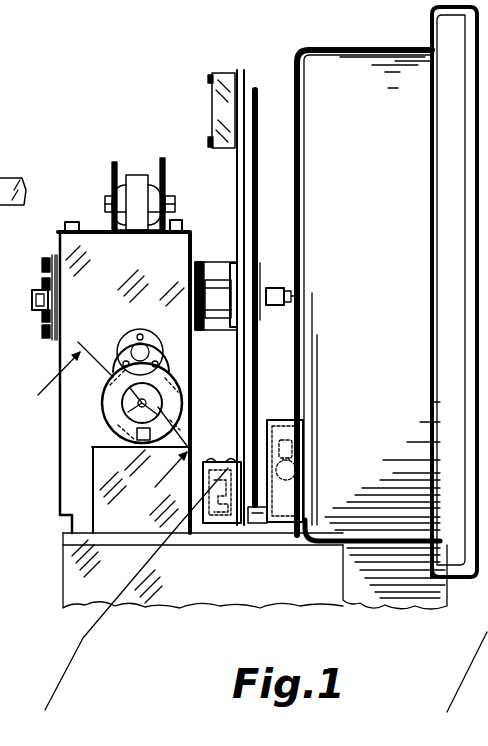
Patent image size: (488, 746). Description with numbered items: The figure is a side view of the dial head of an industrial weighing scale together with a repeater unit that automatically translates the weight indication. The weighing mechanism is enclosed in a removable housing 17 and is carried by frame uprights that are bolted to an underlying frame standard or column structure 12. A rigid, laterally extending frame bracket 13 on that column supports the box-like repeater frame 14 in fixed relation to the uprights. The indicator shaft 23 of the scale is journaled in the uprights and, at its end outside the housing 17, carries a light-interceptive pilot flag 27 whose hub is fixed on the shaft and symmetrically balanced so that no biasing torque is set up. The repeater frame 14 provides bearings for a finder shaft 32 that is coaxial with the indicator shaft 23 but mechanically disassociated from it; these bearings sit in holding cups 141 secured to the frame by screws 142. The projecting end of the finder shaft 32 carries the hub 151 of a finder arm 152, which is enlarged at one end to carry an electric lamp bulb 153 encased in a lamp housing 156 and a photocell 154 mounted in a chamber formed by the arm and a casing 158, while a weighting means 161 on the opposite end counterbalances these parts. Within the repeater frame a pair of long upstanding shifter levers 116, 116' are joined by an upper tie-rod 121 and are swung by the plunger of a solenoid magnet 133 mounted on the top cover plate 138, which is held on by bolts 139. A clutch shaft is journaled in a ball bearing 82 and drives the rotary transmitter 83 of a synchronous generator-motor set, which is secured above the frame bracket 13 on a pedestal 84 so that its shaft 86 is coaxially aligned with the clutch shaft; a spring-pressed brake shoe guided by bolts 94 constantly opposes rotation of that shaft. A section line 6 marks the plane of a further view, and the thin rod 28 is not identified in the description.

The section line 6 is at (130, 526).
The frame standard or column structure 12 is at (395, 577).
The frame bracket 13 is at (203, 570).
The repeater frame 14 is at (124, 382).
The removable housing 17 is at (368, 295).
The indicator shaft 23 is at (280, 290).
The pilot flag 27 is at (368, 368).
The rod 28 is at (260, 280).
The finder shaft 32 is at (34, 300).
The ball bearing 82 is at (14, 153).
The rotary transmitter 83 is at (112, 412).
The pedestal 84 is at (141, 490).
The shaft of rotary transmitter 86 is at (135, 432).
The bolt 94 is at (20, 183).
The shifter lever 116 is at (109, 187).
The shifter lever 116' is at (179, 186).
The tie-rod 121 is at (108, 200).
The solenoid magnet 133 is at (138, 185).
The top cover plate 138 is at (180, 228).
The bolt 139 is at (72, 222).
The holding cup 141 is at (55, 255).
The screw 142 is at (44, 263).
The hub 151 is at (222, 330).
The finder arm 152 is at (240, 373).
The electric lamp bulb 153 is at (190, 643).
The photocell 154 is at (230, 458).
The lamp housing 156 is at (278, 430).
The casing 158 is at (206, 524).
The weighting means 161 is at (222, 99).